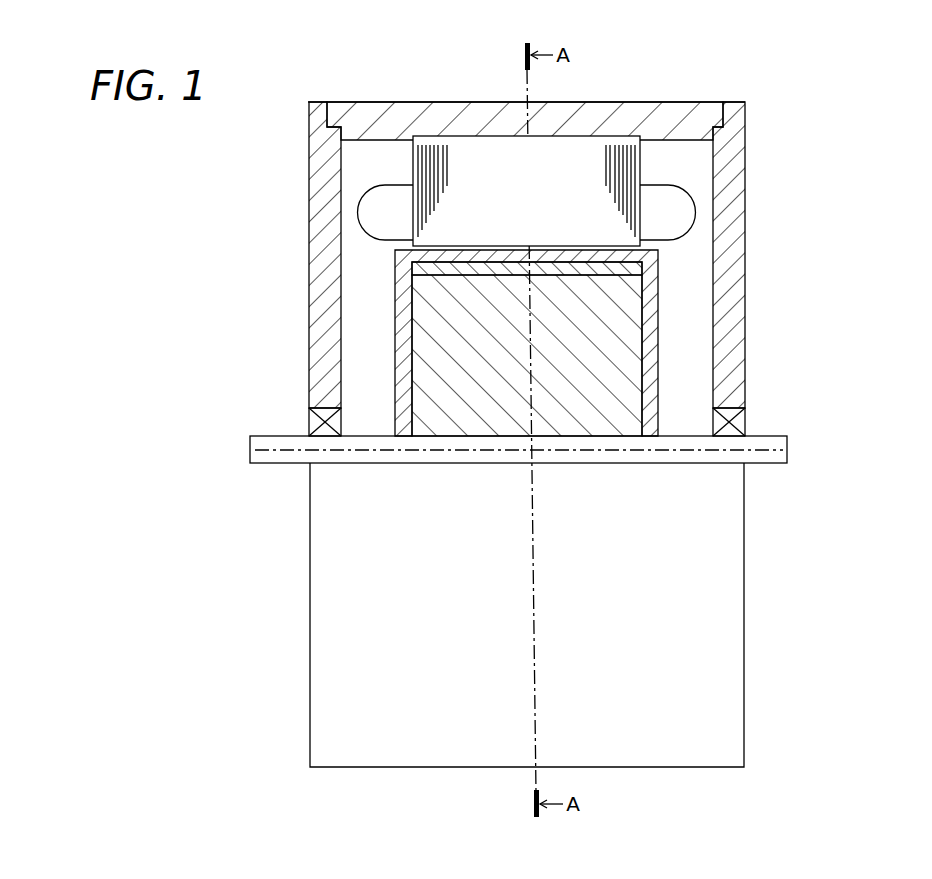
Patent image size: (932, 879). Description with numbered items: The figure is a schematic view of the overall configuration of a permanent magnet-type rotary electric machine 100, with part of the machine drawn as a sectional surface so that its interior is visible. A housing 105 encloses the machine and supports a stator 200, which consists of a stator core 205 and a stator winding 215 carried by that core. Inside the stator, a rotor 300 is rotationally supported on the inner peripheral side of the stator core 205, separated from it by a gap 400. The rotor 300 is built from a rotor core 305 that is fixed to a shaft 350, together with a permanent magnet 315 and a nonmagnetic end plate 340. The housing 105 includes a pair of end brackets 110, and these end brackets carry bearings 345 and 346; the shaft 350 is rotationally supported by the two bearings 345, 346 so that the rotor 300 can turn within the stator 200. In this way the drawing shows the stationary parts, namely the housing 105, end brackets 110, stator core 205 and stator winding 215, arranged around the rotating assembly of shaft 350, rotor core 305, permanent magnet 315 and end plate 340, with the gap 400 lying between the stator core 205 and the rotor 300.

The rotary electric machine 100 is at (752, 123).
The housing 105 is at (397, 127).
The end bracket 110 is at (318, 322).
The stator 200 is at (557, 150).
The stator core 205 is at (532, 150).
The stator winding 215 is at (372, 206).
The rotor 300 is at (571, 408).
The rotor core 305 is at (430, 425).
The permanent magnet 315 is at (485, 263).
The nonmagnetic end plate 340 is at (399, 400).
The bearing 345 is at (737, 420).
The bearing 346 is at (315, 420).
The shaft 350 is at (268, 456).
The gap 400 is at (587, 243).